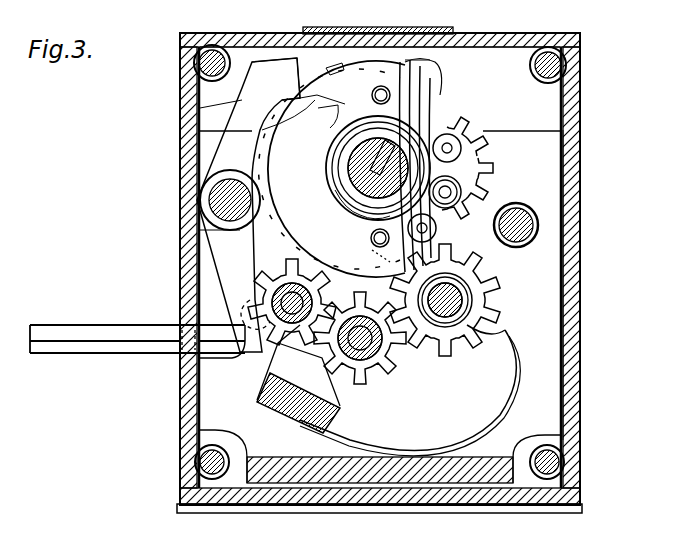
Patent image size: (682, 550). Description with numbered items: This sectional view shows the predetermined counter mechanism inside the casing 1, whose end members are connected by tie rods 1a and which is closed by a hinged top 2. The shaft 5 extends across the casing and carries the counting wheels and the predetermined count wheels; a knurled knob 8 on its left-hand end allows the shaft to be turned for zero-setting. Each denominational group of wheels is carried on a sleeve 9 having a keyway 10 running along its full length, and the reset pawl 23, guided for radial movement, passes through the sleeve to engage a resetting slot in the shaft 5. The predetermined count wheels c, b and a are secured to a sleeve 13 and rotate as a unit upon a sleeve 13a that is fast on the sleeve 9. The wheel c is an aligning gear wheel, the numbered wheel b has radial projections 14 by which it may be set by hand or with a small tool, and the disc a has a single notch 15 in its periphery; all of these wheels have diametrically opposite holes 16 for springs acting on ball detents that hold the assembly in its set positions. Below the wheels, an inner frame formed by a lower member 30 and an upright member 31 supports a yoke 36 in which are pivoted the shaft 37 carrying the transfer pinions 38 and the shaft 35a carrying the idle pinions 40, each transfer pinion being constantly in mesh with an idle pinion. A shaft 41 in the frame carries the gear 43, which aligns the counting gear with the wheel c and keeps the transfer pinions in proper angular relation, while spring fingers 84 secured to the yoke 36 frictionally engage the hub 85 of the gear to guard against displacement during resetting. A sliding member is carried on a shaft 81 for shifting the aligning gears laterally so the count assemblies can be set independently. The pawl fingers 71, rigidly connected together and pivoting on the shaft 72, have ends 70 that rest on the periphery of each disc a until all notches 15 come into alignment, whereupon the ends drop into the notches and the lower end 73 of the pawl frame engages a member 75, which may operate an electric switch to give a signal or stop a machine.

The casing 1 is at (565, 116).
The tie rods 1a is at (200, 56).
The hinged top 2 is at (528, 35).
The shaft 5 is at (352, 170).
The knurled knob 8 is at (458, 100).
The sleeve 9 is at (355, 140).
The keyway 10 is at (386, 261).
The sleeve 13 is at (366, 223).
The sleeve 13a is at (342, 195).
The radial projections 14 is at (350, 58).
The notch 15 is at (304, 100).
The holes 16 is at (381, 86).
The reset pawl 23 is at (378, 138).
The lower member 30 is at (344, 508).
The upright member 31 is at (560, 208).
The shaft 35a is at (380, 360).
The yoke 36 is at (340, 406).
The shaft 37 is at (262, 300).
The transfer pinions 38 is at (229, 358).
The idle pinions 40 is at (394, 374).
The shaft 41 is at (458, 292).
The gear 43 is at (490, 286).
The ends of pawl fingers 70 is at (288, 62).
The pawl fingers 71 is at (200, 108).
The shaft 72 is at (200, 206).
The lower end of pawl frame 73 is at (225, 255).
The member 75 is at (100, 355).
The shaft 81 is at (538, 232).
The spring fingers 84 is at (490, 408).
The hubs 85 is at (505, 307).
The disc a is at (336, 66).
The numbered wheel b is at (415, 60).
The gear wheel c is at (432, 76).